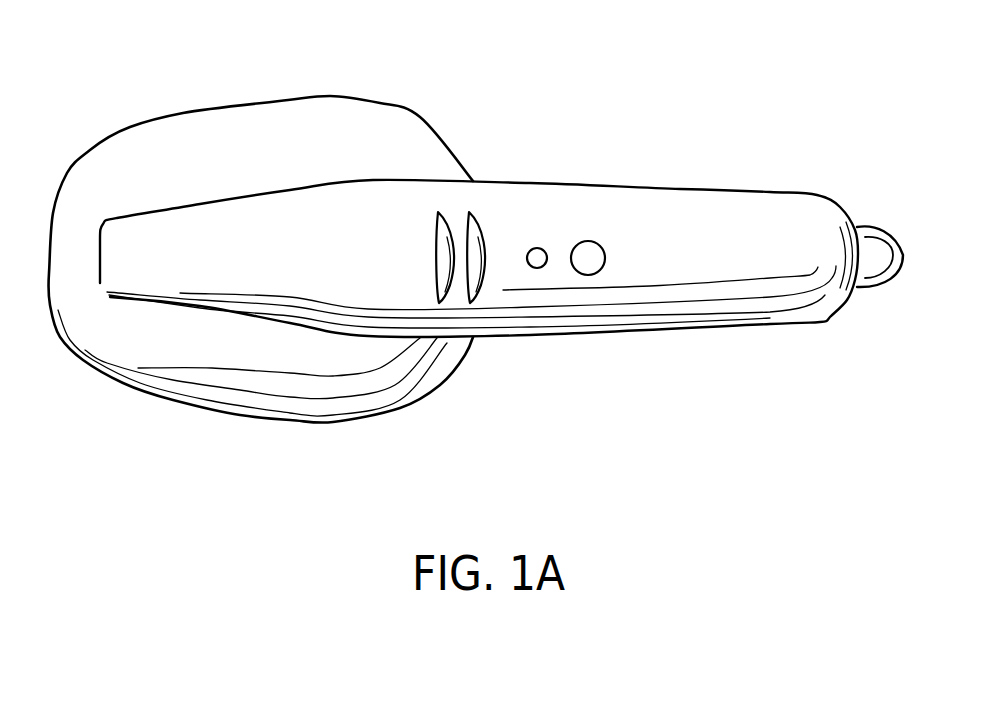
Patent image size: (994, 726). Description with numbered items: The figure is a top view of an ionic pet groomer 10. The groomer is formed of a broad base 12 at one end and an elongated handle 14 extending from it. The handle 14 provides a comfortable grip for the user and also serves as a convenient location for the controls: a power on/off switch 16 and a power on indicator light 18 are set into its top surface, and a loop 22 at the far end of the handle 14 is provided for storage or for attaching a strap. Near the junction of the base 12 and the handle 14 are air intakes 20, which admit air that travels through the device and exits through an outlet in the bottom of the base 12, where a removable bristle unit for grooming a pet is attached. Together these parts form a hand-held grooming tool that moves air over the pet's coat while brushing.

The ionic pet groomer 10 is at (622, 383).
The base 12 is at (185, 187).
The handle 14 is at (675, 252).
The power on/off switch 16 is at (588, 258).
The power on indicator light 18 is at (537, 247).
The air intakes 20 is at (452, 227).
The loop 22 is at (877, 233).